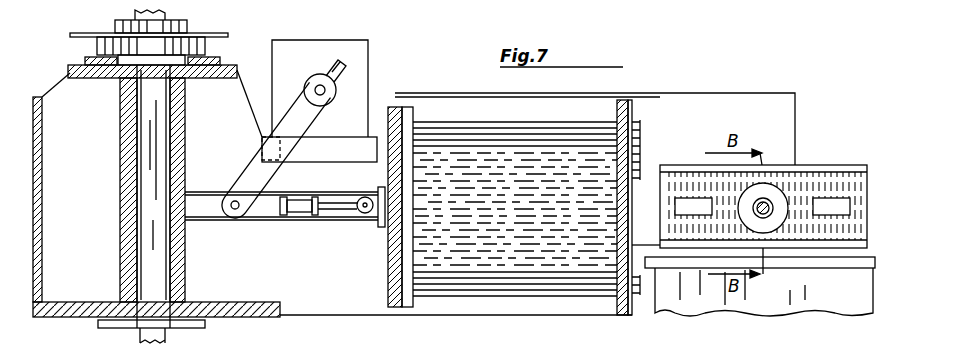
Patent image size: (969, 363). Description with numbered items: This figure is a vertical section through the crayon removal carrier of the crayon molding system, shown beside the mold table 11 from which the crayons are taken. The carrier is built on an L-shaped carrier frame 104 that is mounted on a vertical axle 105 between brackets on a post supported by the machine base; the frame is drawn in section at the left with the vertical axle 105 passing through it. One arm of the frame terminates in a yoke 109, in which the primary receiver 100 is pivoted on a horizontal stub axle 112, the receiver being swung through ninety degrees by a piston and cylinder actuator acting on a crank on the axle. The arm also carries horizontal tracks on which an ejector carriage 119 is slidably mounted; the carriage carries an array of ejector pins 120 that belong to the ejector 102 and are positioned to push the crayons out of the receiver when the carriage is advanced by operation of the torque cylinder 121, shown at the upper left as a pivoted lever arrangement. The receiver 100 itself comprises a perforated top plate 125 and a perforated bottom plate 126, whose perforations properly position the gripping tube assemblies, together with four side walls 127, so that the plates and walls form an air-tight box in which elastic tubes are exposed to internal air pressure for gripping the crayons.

The mold table 11 is at (808, 288).
The primary receiver 100 is at (822, 165).
The ejector 102 is at (462, 118).
The L-shaped carrier frame 104 is at (90, 275).
The vertical axle 105 is at (145, 220).
The yoke 109 is at (733, 108).
The horizontal stub axle 112 is at (772, 218).
The ejector carriage 119 is at (390, 265).
The ejector pins 120 is at (596, 296).
The torque cylinder 121 is at (368, 42).
The top plate 125 is at (856, 165).
The bottom plate 126 is at (853, 248).
The side walls 127 is at (665, 193).